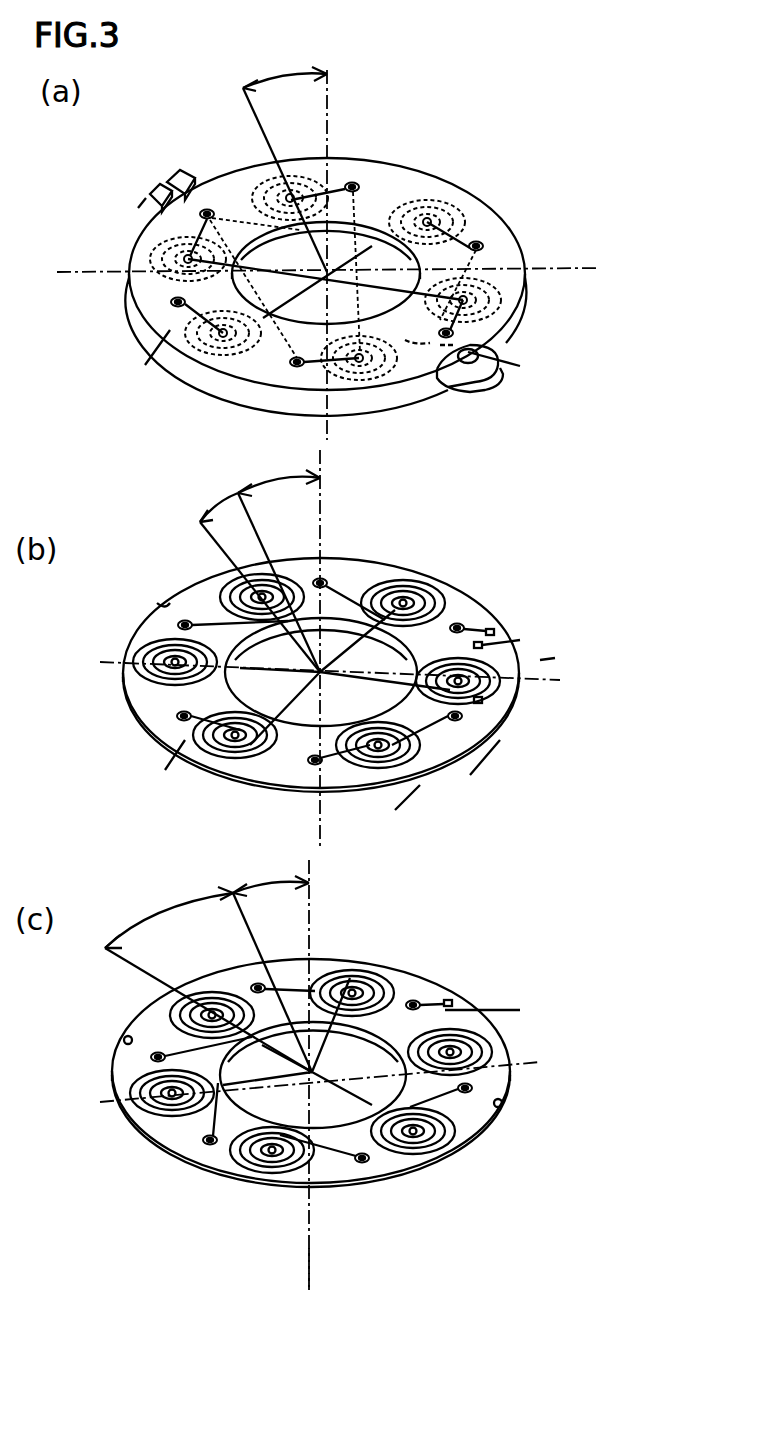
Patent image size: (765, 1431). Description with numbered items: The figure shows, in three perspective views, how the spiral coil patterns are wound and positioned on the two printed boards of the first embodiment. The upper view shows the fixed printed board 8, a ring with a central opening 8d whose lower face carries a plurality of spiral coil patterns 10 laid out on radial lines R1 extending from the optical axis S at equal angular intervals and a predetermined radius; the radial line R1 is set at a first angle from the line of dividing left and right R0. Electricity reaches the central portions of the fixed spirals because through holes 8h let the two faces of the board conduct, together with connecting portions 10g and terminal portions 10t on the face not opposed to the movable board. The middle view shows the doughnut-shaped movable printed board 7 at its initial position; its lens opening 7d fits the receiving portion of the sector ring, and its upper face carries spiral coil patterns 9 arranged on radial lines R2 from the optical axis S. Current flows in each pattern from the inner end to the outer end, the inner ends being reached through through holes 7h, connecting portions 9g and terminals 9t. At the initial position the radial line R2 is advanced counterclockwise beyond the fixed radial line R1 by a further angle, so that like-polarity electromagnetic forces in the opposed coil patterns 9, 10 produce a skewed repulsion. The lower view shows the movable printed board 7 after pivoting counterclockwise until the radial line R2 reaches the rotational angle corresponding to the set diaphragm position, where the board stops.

The movable printed board 7 is at (390, 543).
The opening 7d is at (282, 722).
The through holes 7h is at (455, 722).
The fixed printed board 8 is at (399, 143).
The center hole of yoke plate 8d is at (280, 320).
The through holes 8h is at (482, 246).
The coil patterns 9 is at (415, 580).
The connecting portions 9g is at (175, 765).
The coil terminals 9t is at (535, 628).
The coil patterns 10 is at (448, 165).
The connecting portions 10g is at (160, 368).
The coil terminal positions 10t is at (515, 262).
The line of dividing left and right R0 is at (330, 92).
The radial line R1 is at (255, 118).
The radial line R2 is at (212, 545).
The optical axis S is at (309, 1250).